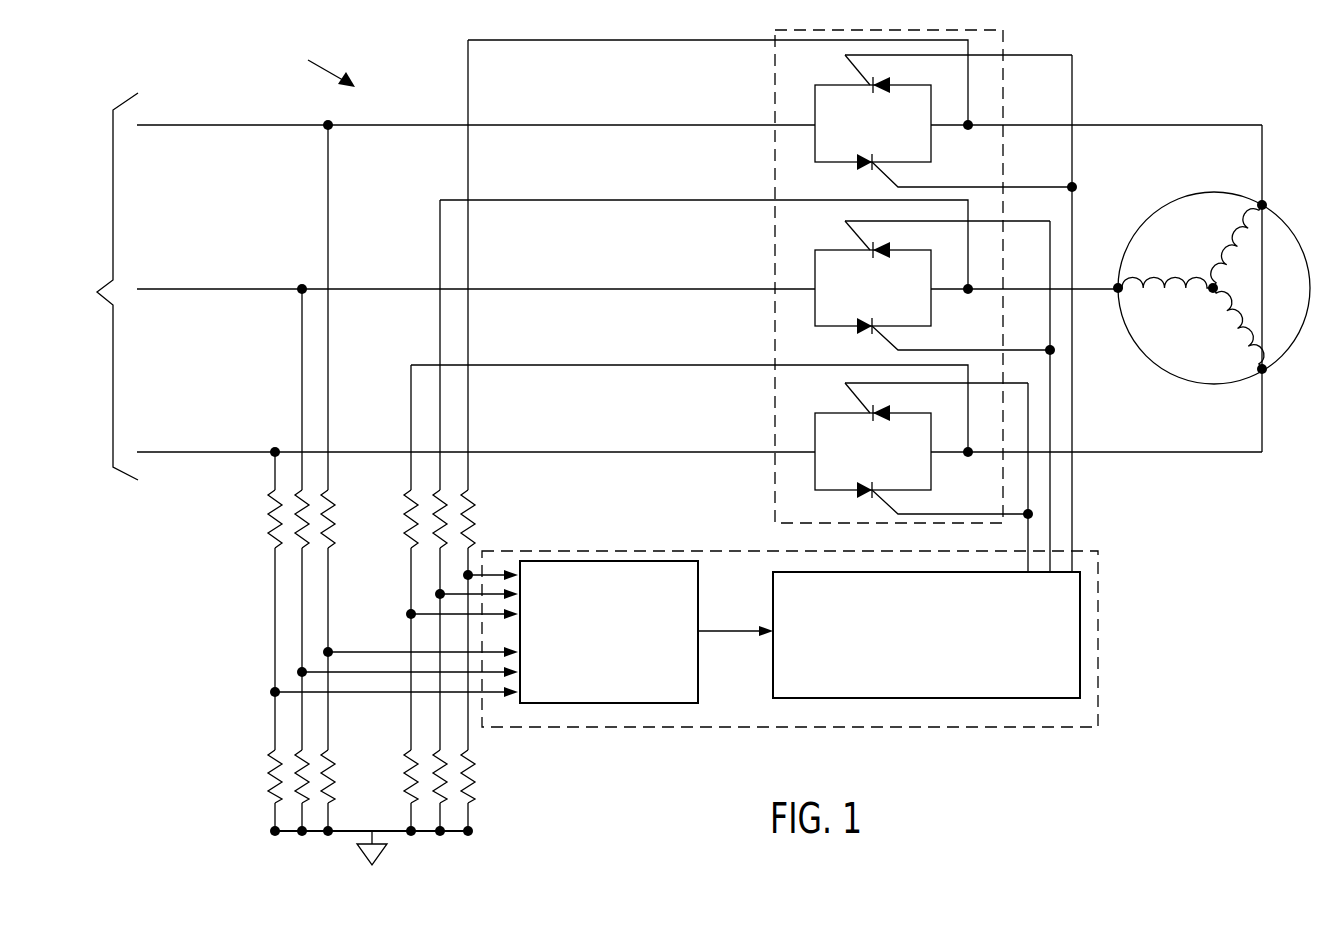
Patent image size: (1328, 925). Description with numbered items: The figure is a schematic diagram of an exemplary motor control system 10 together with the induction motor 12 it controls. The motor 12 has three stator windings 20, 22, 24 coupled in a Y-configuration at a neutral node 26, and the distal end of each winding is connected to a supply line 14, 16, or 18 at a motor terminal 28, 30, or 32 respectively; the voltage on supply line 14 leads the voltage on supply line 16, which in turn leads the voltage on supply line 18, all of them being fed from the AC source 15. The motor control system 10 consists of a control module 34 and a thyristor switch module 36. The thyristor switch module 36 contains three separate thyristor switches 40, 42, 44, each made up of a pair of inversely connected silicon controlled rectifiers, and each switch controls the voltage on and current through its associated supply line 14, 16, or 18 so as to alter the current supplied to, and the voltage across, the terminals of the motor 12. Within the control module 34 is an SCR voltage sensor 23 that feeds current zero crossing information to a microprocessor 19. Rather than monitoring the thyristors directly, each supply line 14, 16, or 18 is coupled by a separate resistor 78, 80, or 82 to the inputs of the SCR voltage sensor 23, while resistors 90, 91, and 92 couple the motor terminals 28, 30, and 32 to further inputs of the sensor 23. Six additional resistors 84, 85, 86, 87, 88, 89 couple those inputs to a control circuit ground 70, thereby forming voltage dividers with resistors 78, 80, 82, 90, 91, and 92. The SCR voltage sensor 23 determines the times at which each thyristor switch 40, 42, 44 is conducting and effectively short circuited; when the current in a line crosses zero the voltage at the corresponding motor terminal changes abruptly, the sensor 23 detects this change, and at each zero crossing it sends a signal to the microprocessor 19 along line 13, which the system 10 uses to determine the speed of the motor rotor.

The motor control system 10 is at (317, 64).
The induction motor 12 is at (1178, 182).
The line 13 is at (713, 630).
The supply line 14 is at (235, 125).
The AC source 15 is at (102, 286).
The supply line 16 is at (235, 289).
The supply line 18 is at (235, 452).
The microprocessor 19 is at (996, 662).
The stator winding 20 is at (1242, 225).
The stator winding 22 is at (1153, 283).
The SCR voltage sensor 23 is at (682, 642).
The stator winding 24 is at (1233, 317).
The neutral node 26 is at (1223, 283).
The motor terminal 28 is at (1262, 205).
The motor terminal 30 is at (1118, 285).
The motor terminal 32 is at (1262, 369).
The control module 34 is at (736, 704).
The thyristor switch module 36 is at (988, 90).
The thyristor switch 40 is at (815, 110).
The thyristor switch 42 is at (815, 270).
The thyristor switch 44 is at (815, 432).
The control circuit ground 70 is at (358, 852).
The resistor 78 is at (275, 505).
The resistor 80 is at (305, 517).
The resistor 82 is at (325, 535).
The resistor 84 is at (277, 755).
The resistor 85 is at (303, 778).
The resistor 86 is at (327, 785).
The resistor 87 is at (417, 765).
The resistor 88 is at (445, 767).
The resistor 89 is at (470, 788).
The resistor 90 is at (470, 490).
The resistor 91 is at (463, 512).
The resistor 92 is at (412, 522).